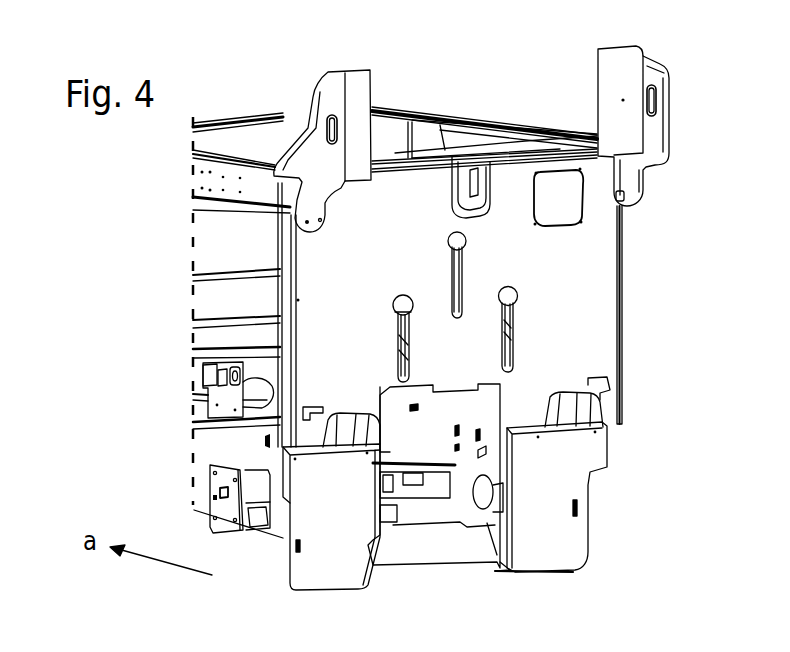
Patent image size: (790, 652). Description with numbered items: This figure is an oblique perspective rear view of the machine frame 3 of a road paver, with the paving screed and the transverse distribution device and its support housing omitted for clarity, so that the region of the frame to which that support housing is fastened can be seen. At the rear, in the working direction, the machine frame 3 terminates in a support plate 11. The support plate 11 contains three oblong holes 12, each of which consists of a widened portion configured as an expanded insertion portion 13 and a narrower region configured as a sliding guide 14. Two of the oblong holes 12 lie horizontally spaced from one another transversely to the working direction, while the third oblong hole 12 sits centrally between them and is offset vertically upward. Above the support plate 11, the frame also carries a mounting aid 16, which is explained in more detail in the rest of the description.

The machine frame 3 is at (438, 123).
The support plate 11 is at (335, 266).
The oblong hole 12 is at (456, 301).
The expanded insertion portion 13 is at (408, 298).
The sliding guide 14 is at (400, 364).
The mounting aid 16 is at (466, 178).